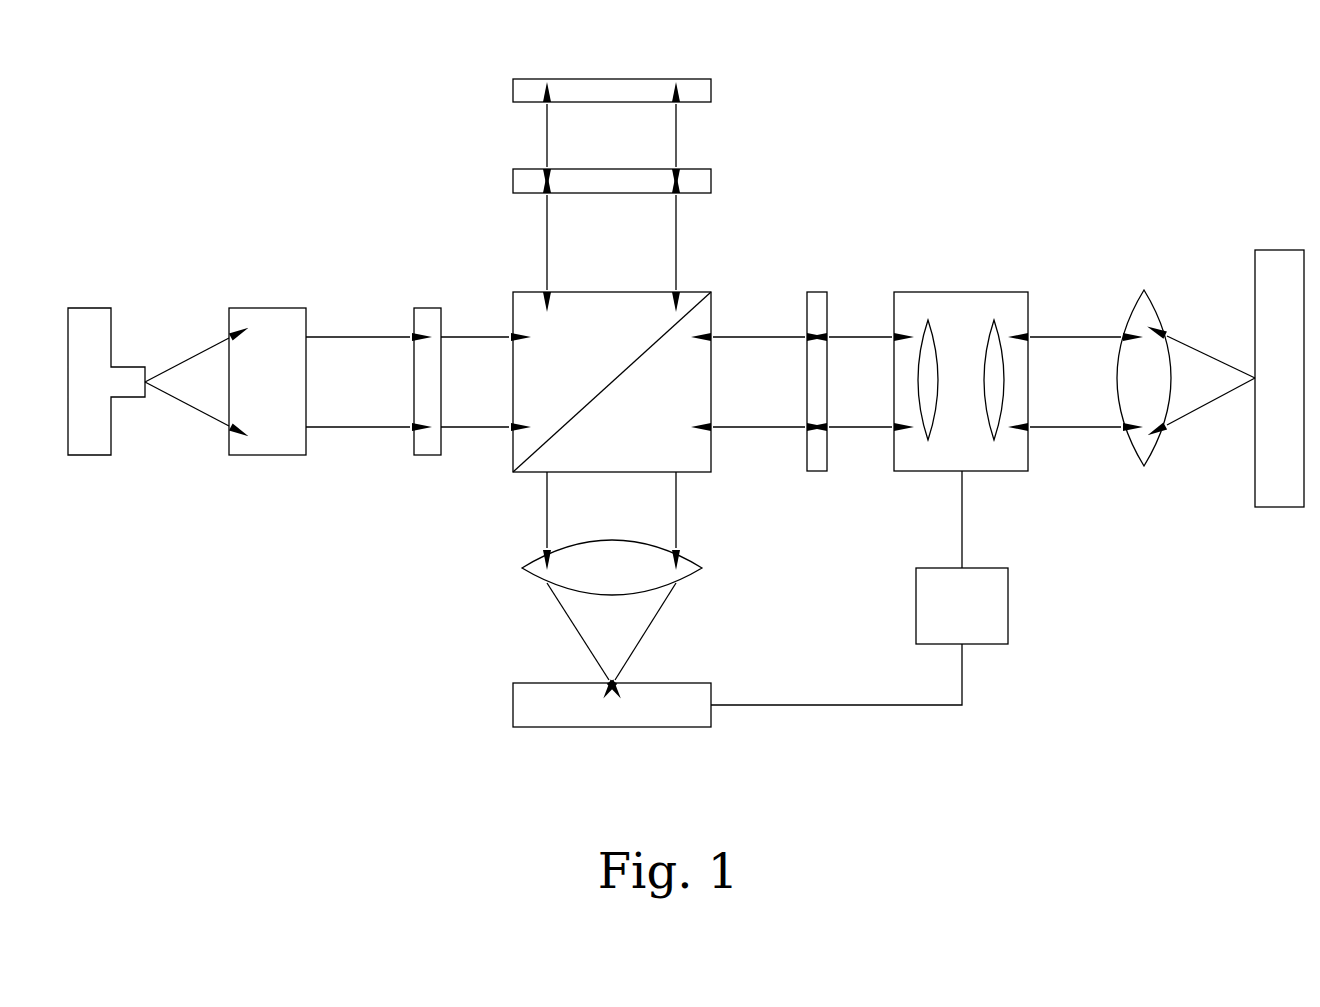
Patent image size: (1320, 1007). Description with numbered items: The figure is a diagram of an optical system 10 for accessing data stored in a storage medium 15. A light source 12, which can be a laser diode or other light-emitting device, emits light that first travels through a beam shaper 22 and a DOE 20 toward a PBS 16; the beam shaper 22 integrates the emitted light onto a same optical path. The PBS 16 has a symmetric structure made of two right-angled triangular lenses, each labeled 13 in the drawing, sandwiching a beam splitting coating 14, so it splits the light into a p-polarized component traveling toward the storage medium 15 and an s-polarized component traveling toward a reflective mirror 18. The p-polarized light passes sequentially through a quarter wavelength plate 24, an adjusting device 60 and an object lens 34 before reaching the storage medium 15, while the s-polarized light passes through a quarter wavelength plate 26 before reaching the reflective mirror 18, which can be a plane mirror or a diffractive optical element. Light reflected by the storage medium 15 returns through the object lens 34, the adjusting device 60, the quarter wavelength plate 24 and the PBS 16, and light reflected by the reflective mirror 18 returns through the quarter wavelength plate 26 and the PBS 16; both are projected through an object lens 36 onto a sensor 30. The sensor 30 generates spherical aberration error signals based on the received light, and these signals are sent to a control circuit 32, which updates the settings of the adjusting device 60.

The optical system 10 is at (1106, 170).
The light source 12 is at (74, 394).
The prism 13 is at (561, 354).
The beam splitting coating 14 is at (685, 316).
The storage medium 15 is at (1264, 390).
The PBS 16 is at (691, 292).
The reflective mirror 18 is at (711, 96).
The DOE 20 is at (254, 388).
The beam shaper 22 is at (427, 308).
The quarter wavelength plate 24 is at (817, 292).
The quarter wavelength plate 26 is at (711, 187).
The sensor 30 is at (601, 715).
The control circuit 32 is at (948, 621).
The object lens 34 is at (1128, 390).
The object lens 36 is at (601, 581).
The adjusting device 60 is at (942, 292).